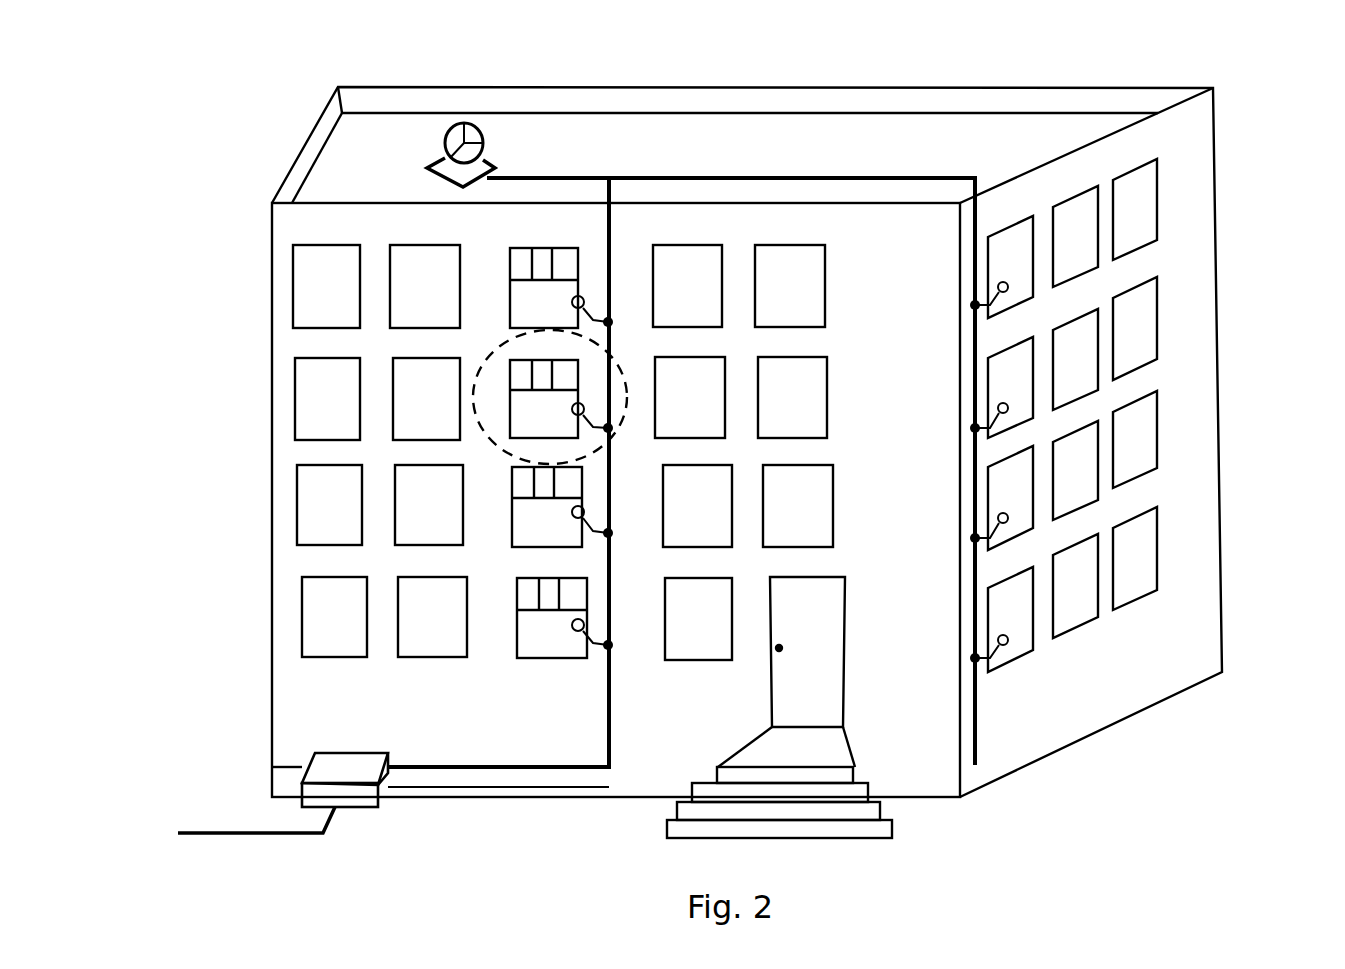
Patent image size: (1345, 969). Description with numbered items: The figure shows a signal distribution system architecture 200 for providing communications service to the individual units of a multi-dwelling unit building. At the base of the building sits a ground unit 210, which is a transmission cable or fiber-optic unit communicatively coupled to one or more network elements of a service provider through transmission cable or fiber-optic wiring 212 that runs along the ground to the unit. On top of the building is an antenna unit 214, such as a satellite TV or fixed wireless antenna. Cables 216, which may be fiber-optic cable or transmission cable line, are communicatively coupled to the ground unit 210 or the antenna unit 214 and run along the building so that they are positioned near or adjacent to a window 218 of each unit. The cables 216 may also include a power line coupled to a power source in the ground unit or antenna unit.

The signal distribution system architecture 200 is at (1144, 52).
The ground unit 210 is at (347, 762).
The transmission cable or fiber-optic wiring 212 is at (245, 833).
The antenna unit 214 is at (483, 148).
The cables 216 is at (613, 262).
The window 218 is at (522, 315).